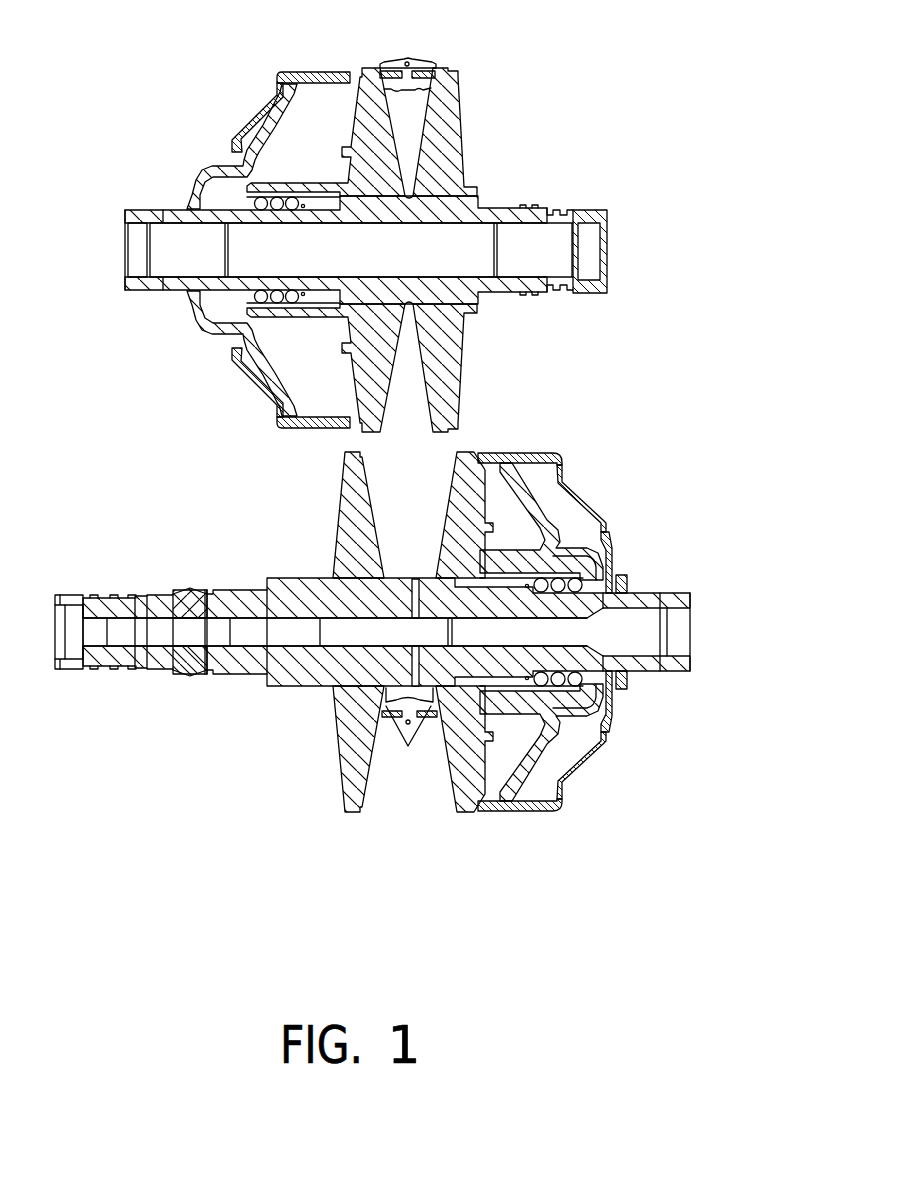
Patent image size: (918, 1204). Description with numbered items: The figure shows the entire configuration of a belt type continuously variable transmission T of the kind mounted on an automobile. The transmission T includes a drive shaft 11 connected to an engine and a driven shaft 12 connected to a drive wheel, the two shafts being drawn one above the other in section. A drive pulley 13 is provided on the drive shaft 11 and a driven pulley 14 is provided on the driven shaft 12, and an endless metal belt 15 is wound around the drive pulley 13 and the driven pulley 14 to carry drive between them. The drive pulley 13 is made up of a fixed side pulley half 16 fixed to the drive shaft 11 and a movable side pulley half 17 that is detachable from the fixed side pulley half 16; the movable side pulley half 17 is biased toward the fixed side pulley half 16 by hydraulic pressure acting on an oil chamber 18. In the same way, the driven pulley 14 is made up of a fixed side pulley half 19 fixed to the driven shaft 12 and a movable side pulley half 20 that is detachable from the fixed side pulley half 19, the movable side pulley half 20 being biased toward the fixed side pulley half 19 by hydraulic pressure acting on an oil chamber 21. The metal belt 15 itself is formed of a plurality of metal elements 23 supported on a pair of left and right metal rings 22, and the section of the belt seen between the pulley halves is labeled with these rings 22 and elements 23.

The belt type continuously variable transmission T is at (206, 107).
The drive shaft 11 is at (529, 206).
The driven shaft 12 is at (303, 586).
The drive pulley 13 is at (410, 250).
The driven pulley 14 is at (413, 616).
The endless metal belt 15 is at (419, 47).
The fixed side pulley half 16 is at (457, 167).
The movable side pulley half 17 is at (381, 118).
The oil chamber 18 is at (298, 153).
The fixed side pulley half 19 is at (367, 509).
The movable side pulley half 20 is at (456, 631).
The oil chamber 21 is at (520, 551).
The metal rings 22 is at (408, 746).
The metal element 23 is at (420, 58).